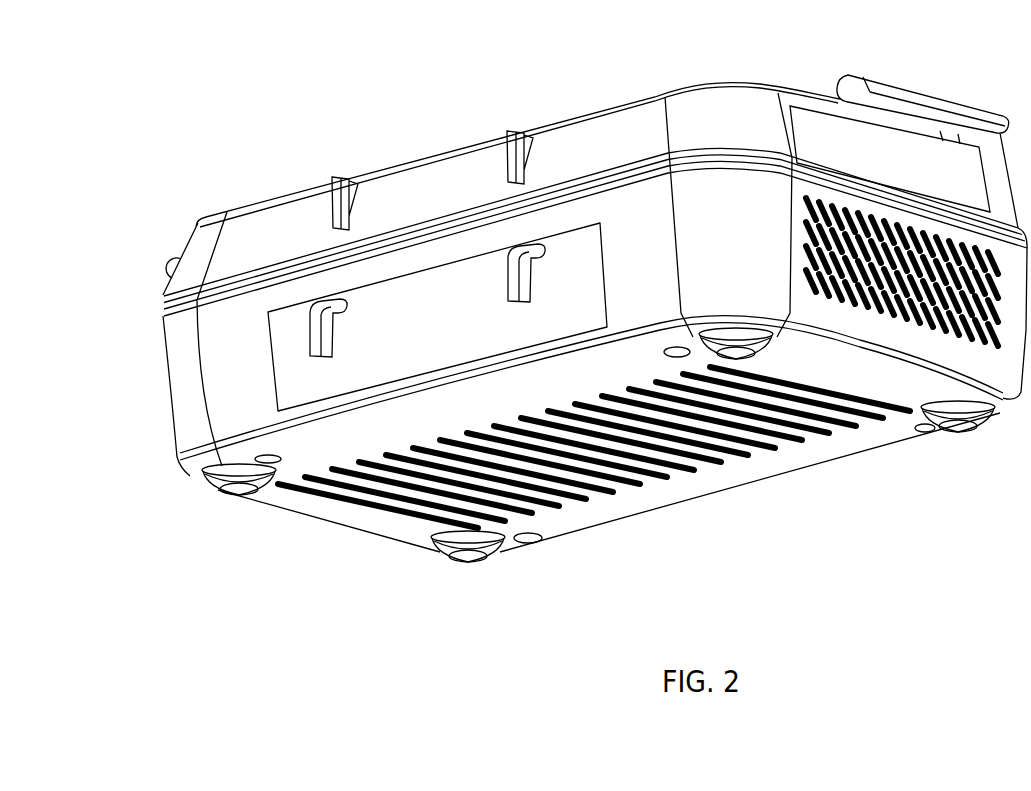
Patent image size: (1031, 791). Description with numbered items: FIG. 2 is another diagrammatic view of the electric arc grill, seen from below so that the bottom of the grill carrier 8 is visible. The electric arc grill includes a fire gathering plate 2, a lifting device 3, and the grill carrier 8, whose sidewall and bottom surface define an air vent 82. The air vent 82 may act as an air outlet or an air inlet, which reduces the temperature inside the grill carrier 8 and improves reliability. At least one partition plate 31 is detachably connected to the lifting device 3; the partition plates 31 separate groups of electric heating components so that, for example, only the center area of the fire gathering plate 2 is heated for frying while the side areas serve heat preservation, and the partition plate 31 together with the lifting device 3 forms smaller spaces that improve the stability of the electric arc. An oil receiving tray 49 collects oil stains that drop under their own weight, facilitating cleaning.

The fire gathering plate 2 is at (925, 100).
The lifting device 3 is at (632, 128).
The grill carrier 8 is at (183, 392).
The partition plate 31 is at (512, 138).
The oil receiving tray 49 is at (320, 387).
The air vent 82 is at (642, 468).